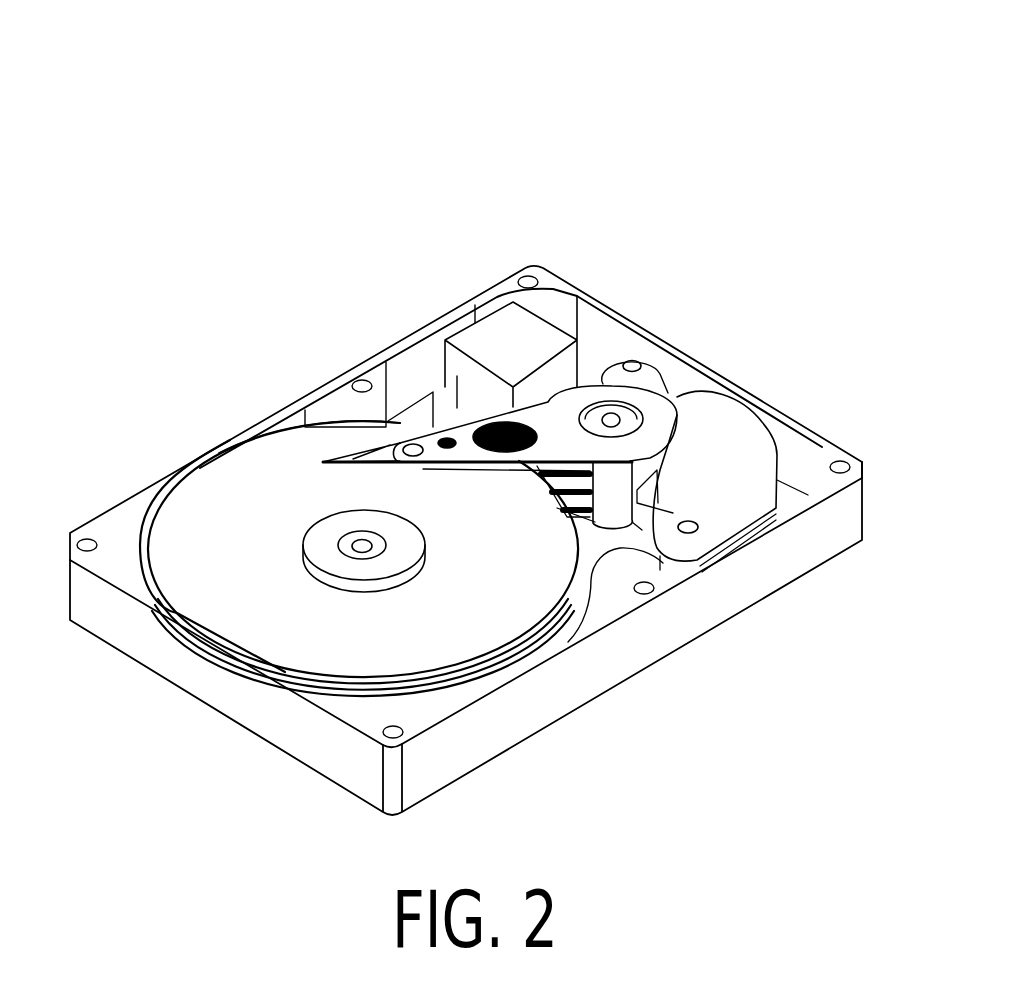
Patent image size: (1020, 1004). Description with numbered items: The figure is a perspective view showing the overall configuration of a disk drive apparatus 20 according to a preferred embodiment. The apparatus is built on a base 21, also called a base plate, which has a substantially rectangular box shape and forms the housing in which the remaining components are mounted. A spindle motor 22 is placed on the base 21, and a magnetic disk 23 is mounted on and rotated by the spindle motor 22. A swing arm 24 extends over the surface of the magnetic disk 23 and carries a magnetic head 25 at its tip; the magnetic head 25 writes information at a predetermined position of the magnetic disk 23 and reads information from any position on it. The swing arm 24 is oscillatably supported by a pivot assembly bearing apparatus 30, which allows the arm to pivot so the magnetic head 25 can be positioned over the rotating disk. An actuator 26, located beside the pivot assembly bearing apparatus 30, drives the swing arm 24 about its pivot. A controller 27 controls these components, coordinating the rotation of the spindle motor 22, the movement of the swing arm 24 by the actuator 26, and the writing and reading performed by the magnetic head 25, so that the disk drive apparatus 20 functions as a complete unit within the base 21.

The disk drive apparatus 20 is at (296, 103).
The base (base plate) 21 is at (625, 312).
The spindle motor 22 is at (423, 540).
The magnetic disk 23 is at (227, 540).
The swing arm 24 is at (463, 437).
The magnetic head 25 is at (330, 452).
The actuator 26 is at (713, 457).
The controller 27 is at (507, 350).
The pivot assembly bearing apparatus 30 is at (632, 415).